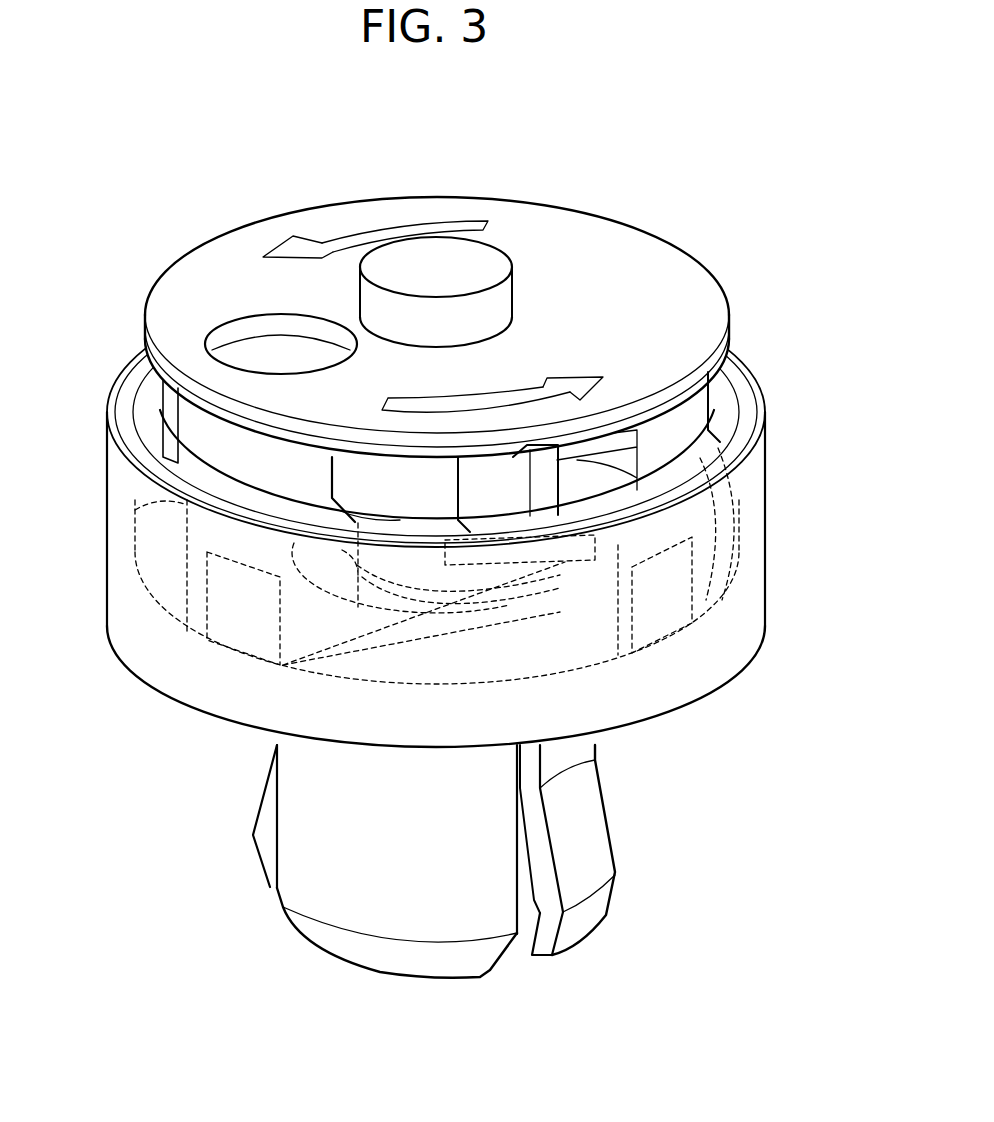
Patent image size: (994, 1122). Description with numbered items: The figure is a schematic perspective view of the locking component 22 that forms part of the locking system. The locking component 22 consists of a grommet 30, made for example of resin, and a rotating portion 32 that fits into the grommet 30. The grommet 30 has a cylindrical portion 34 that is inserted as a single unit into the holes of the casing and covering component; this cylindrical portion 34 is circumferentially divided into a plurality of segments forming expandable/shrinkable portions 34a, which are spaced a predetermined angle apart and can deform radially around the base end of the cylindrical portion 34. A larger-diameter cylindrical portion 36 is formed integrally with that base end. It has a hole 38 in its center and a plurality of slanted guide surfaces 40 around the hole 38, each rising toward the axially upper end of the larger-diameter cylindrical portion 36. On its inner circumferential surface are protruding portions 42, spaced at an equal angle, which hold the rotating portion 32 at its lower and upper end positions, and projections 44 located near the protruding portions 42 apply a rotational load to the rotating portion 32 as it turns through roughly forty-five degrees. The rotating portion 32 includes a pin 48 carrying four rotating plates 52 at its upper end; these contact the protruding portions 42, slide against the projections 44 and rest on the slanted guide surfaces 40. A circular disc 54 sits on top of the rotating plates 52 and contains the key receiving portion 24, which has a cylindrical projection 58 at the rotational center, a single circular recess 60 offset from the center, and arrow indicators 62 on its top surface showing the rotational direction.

The locking component 22 is at (543, 71).
The key receiving portion 24 is at (302, 272).
The grommet 30 is at (353, 960).
The rotating portion 32 is at (694, 241).
The cylindrical portion 34 is at (445, 917).
The expandable/shrinkable portions 34a is at (262, 851).
The larger-diameter cylindrical portion 36 is at (110, 520).
The hole 38 is at (342, 583).
The slanted guide surfaces 40 is at (677, 455).
The protruding portions 42 is at (185, 505).
The projections 44 is at (257, 560).
The pin 48 is at (525, 863).
The rotating plates 52 is at (168, 412).
The circular disc 54 is at (355, 445).
The projection 58 is at (430, 248).
The recess 60 is at (245, 330).
The indicators 62 is at (573, 378).